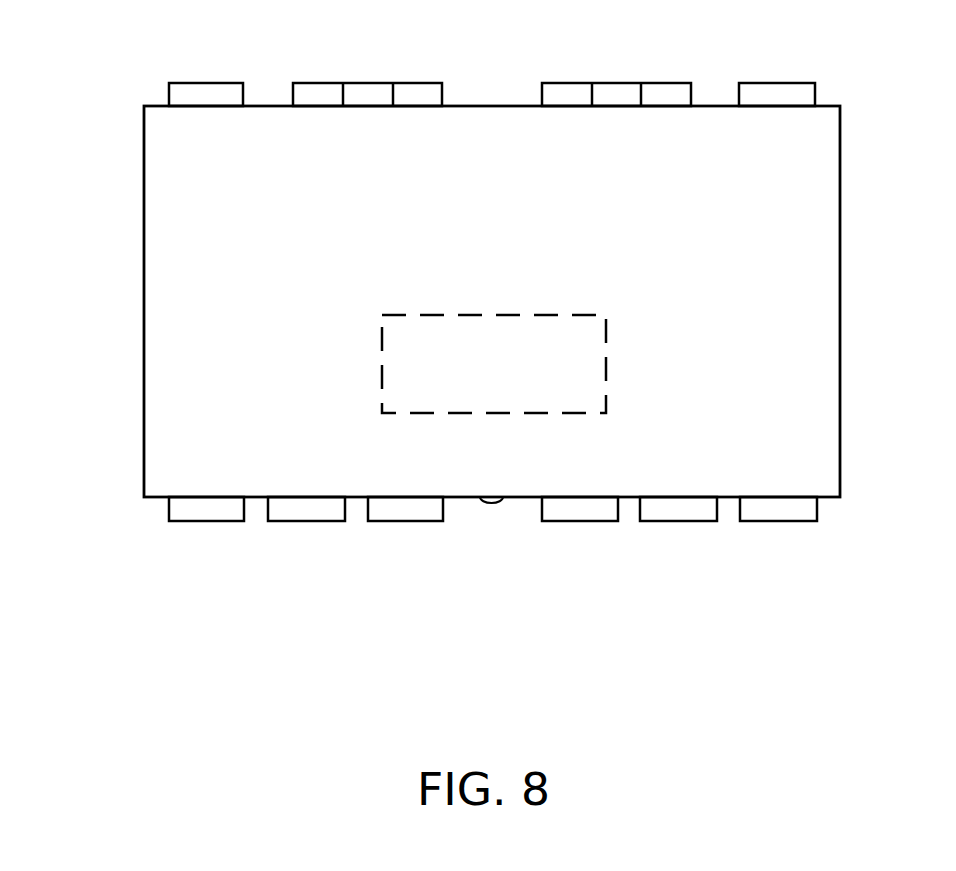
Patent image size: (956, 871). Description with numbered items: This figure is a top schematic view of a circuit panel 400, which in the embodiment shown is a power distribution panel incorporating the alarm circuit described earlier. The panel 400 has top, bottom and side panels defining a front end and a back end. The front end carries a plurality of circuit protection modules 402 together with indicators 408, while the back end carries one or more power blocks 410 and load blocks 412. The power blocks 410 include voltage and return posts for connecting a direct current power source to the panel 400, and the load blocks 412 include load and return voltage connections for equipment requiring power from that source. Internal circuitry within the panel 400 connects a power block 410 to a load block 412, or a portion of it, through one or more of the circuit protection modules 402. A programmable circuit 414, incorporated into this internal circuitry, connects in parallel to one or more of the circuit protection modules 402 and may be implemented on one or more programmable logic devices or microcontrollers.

The circuit panel 400 is at (188, 315).
The circuit protection modules 402 is at (758, 522).
The indicators 408 is at (490, 502).
The power blocks 410 is at (218, 80).
The load blocks 412 is at (368, 81).
The programmable circuit 414 is at (495, 315).